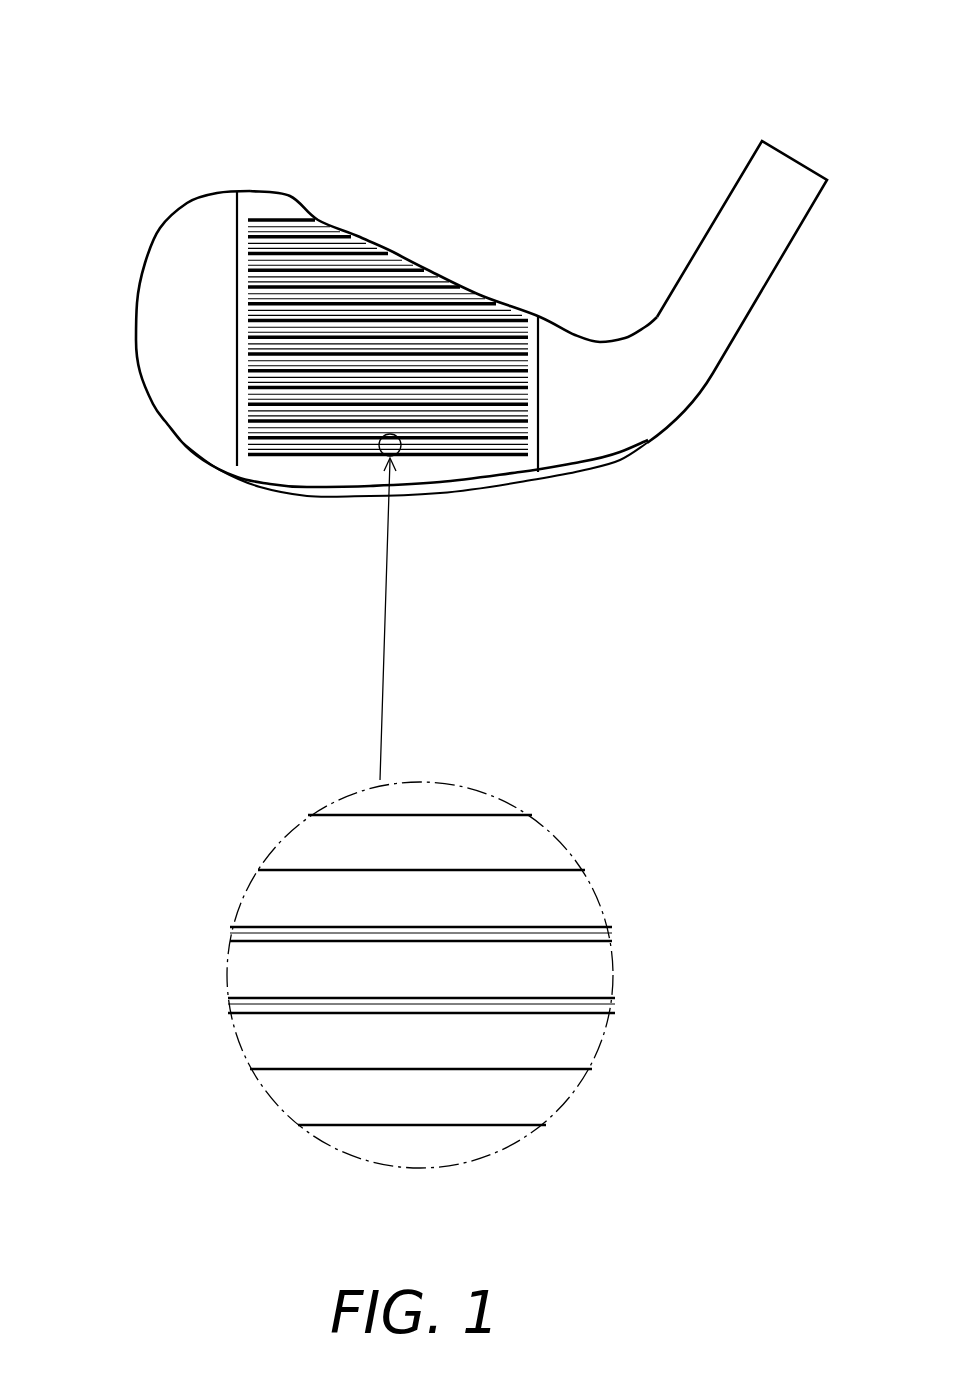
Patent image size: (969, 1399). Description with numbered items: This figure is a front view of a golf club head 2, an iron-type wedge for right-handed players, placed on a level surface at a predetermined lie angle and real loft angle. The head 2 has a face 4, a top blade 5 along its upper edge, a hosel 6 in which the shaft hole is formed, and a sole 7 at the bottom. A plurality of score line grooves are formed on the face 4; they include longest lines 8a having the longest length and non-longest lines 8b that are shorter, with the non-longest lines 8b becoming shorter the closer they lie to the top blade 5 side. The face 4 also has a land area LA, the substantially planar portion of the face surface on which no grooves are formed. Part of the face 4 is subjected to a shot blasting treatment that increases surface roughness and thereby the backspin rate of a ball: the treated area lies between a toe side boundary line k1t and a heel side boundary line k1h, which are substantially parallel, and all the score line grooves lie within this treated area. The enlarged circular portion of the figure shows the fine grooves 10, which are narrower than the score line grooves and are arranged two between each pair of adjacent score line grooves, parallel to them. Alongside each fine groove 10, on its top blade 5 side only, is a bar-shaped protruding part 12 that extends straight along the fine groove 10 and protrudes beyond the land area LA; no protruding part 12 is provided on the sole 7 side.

The golf club head 2 is at (463, 306).
The face 4 is at (382, 345).
The top blade 5 is at (415, 231).
The hosel 6 is at (738, 170).
The sole 7 is at (422, 495).
The longest line 8a is at (270, 456).
The non-longest line 8b is at (265, 220).
The fine groove 10 is at (462, 972).
The protruding part 12 is at (578, 928).
The heel side boundary line k1h is at (548, 393).
The toe side boundary line k1t is at (237, 387).
The land area LA is at (517, 465).